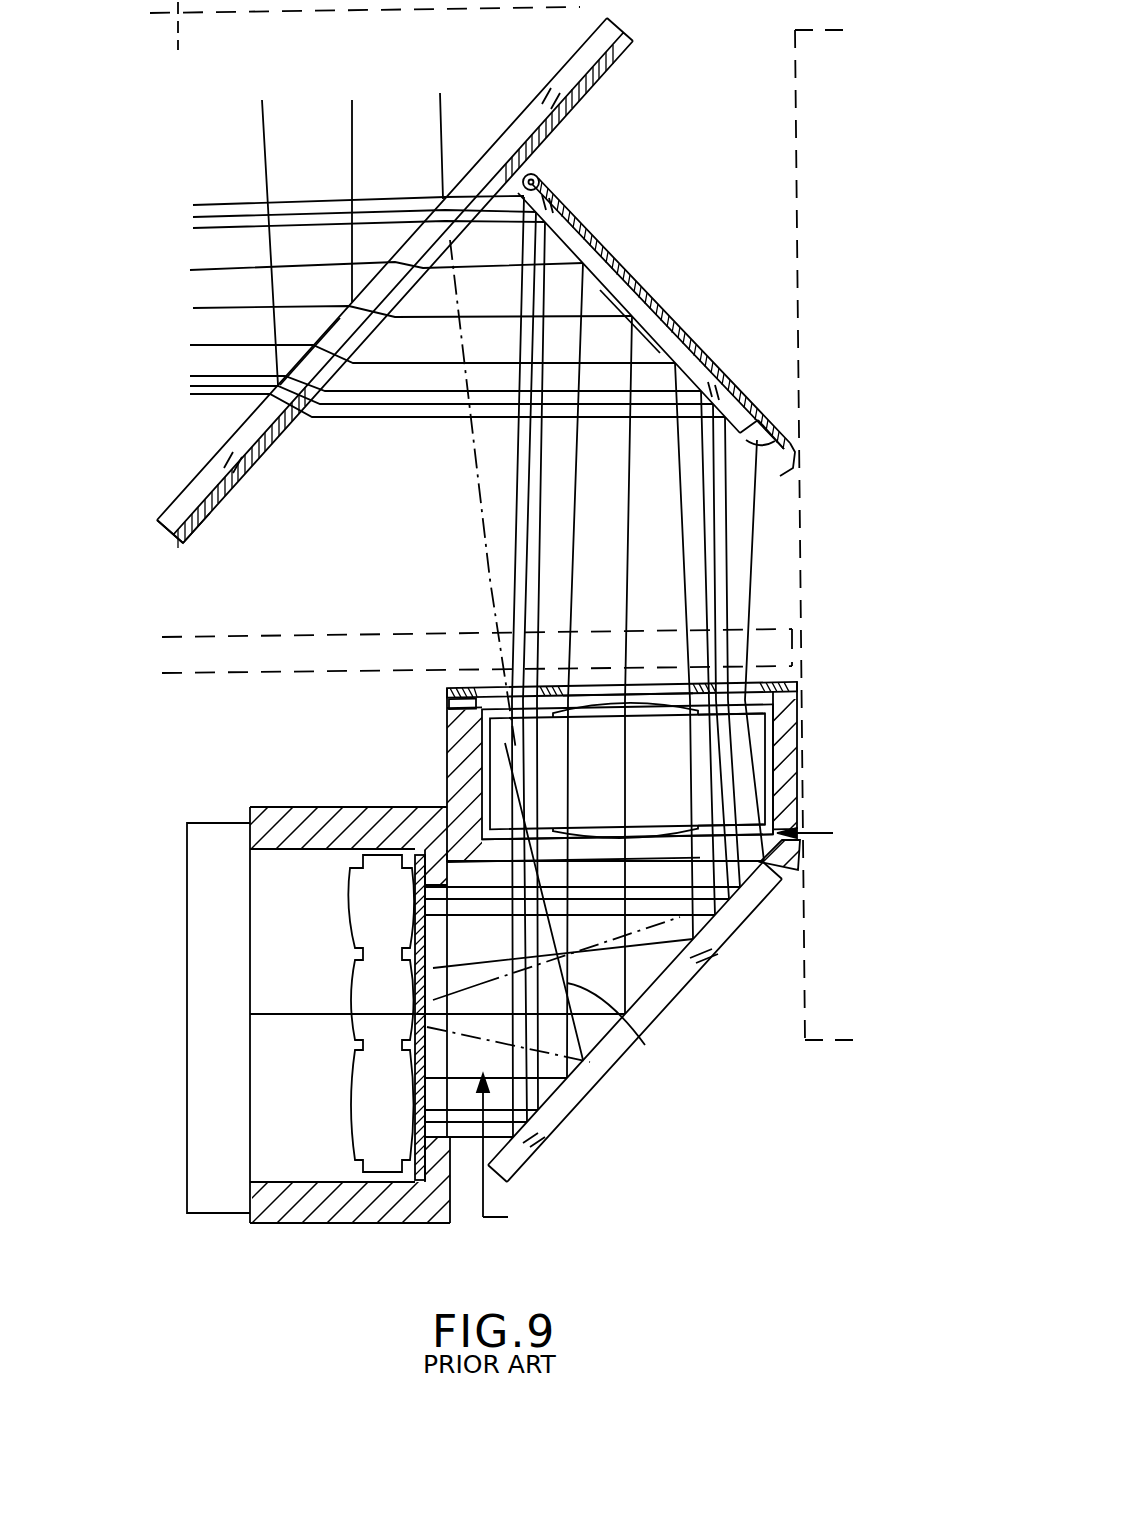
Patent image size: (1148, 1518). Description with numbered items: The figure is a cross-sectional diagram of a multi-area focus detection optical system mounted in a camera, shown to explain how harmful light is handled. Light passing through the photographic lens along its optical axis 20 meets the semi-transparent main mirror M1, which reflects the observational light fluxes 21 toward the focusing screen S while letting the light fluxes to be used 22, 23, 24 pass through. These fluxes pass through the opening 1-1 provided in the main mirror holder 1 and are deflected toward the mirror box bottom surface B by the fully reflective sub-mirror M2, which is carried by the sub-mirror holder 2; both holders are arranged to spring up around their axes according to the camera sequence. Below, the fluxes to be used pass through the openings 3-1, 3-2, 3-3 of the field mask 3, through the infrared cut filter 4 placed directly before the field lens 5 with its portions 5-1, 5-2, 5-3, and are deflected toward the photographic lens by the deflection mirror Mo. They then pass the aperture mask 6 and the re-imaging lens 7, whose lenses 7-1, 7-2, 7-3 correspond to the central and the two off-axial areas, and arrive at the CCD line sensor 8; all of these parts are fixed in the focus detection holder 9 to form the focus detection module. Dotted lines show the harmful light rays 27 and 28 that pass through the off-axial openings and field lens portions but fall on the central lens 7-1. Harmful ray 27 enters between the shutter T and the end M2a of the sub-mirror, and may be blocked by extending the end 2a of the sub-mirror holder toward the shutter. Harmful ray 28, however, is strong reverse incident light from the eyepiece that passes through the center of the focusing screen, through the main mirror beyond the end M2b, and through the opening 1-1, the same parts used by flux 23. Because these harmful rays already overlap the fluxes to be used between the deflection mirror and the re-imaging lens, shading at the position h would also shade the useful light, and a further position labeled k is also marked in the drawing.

The focusing screen S is at (365, 44).
The shutter T is at (806, 250).
The mirror box bottom surface B is at (258, 655).
The optical axis of the photographic lens 20 is at (198, 307).
The light fluxes for view finder observation 21 is at (457, 85).
The main mirror M1 is at (580, 78).
The main mirror holder 1 is at (217, 516).
The opening 1-1 is at (303, 410).
The sub-mirror M2 is at (613, 282).
The end of sub-mirror M2a is at (766, 425).
The end of sub-mirror on the photographic lens side M2b is at (541, 182).
The sub-mirror holder 2 is at (701, 350).
The end of the sub-mirror holder 2a is at (794, 448).
The light flux to be used 23 is at (512, 548).
The light flux to be used 22 is at (682, 534).
The light flux to be used 24 is at (748, 580).
The field mask 3 is at (462, 686).
The opening of field mask 3-1 is at (578, 685).
The opening of field mask 3-2 is at (503, 690).
The opening of field mask 3-3 is at (740, 686).
The infrared cut filter 4 is at (470, 705).
The field lens 5 is at (770, 777).
The field lens 5-1 is at (790, 866).
The field lens 5-2 is at (497, 752).
The field lens 5-3 is at (760, 745).
The harmful light ray 27 is at (735, 815).
The direction k is at (815, 833).
The deflection mirror Mo is at (722, 933).
The harmful light ray 28 is at (637, 1040).
The shading position h is at (502, 1153).
The focus detection holder 9 is at (303, 820).
The aperture mask 6 is at (418, 860).
The CCD line sensor 8 is at (215, 838).
The re-imaging lens 7 is at (380, 853).
The re-imaging lens 7-1 is at (360, 1035).
The re-imaging lens 7-2 is at (368, 1120).
The re-imaging lens 7-3 is at (360, 922).